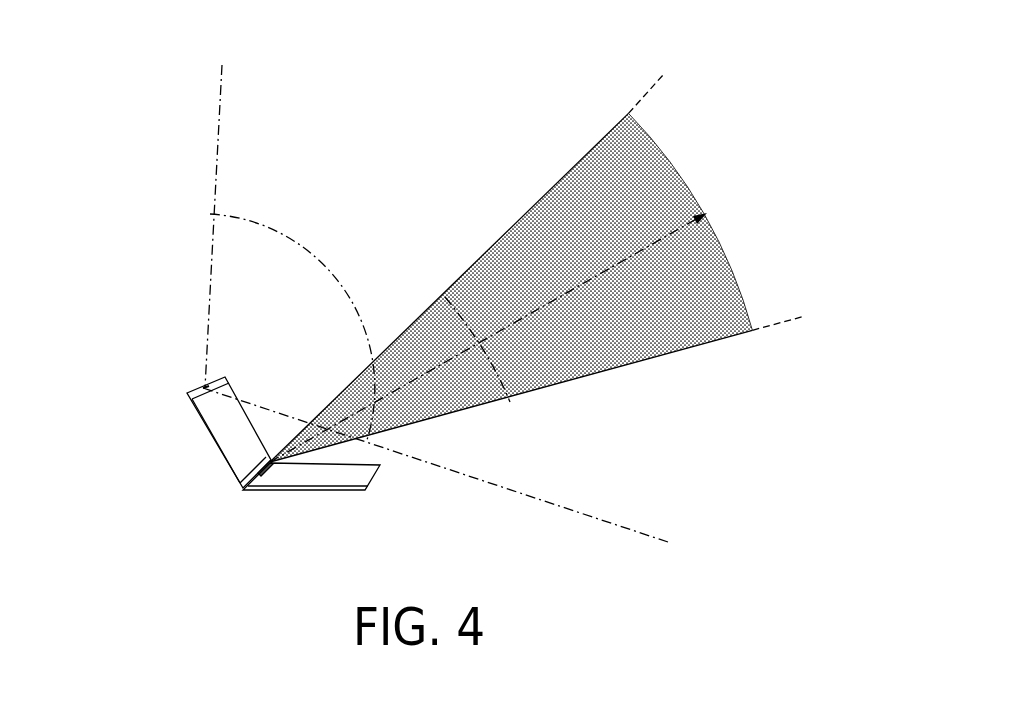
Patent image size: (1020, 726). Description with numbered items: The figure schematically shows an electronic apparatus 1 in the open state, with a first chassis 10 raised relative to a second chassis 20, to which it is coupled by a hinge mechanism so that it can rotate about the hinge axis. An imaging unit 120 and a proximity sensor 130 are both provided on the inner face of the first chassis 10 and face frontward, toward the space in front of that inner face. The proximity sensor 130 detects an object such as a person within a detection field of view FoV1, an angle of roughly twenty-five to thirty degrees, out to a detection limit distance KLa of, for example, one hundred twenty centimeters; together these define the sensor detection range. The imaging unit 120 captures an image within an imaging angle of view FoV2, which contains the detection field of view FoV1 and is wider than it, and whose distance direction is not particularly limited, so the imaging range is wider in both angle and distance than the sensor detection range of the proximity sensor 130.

The electronic apparatus 1 is at (176, 357).
The first chassis 10 is at (220, 447).
The second chassis 20 is at (332, 491).
The imaging unit 120 is at (207, 388).
The proximity sensor 130 is at (264, 473).
The detection field of view FoV1 is at (467, 272).
The imaging angle of view FoV2 is at (307, 250).
The detection limit distance KLa is at (512, 329).